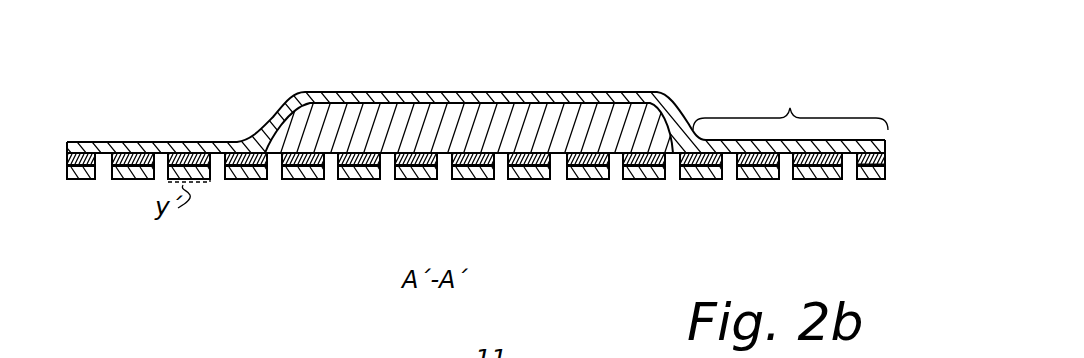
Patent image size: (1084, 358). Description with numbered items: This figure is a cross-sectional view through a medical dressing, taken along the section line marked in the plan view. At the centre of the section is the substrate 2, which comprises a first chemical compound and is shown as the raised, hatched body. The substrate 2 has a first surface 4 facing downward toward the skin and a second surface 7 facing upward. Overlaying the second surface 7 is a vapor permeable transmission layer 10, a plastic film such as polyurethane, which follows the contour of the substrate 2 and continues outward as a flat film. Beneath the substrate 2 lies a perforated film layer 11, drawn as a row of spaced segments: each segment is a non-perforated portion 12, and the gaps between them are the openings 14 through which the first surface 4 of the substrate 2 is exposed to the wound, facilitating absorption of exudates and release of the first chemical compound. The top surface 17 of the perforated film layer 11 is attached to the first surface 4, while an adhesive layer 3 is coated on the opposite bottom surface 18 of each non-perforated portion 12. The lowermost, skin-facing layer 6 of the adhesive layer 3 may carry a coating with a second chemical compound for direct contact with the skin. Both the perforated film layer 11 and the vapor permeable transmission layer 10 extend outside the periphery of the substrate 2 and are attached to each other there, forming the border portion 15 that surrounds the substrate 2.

The substrate 2 is at (623, 123).
The adhesive layer 3 is at (885, 172).
The first surface 4 is at (525, 164).
The skin-facing layer 6 is at (575, 178).
The second surface 7 is at (403, 92).
The vapor permeable transmission layer 10 is at (886, 141).
The perforated film layer 11 is at (885, 158).
The non-perforated portion 12 is at (590, 162).
The openings 14 is at (222, 170).
The border portion 15 is at (790, 105).
The top surface 17 is at (418, 154).
The bottom surface 18 is at (363, 177).